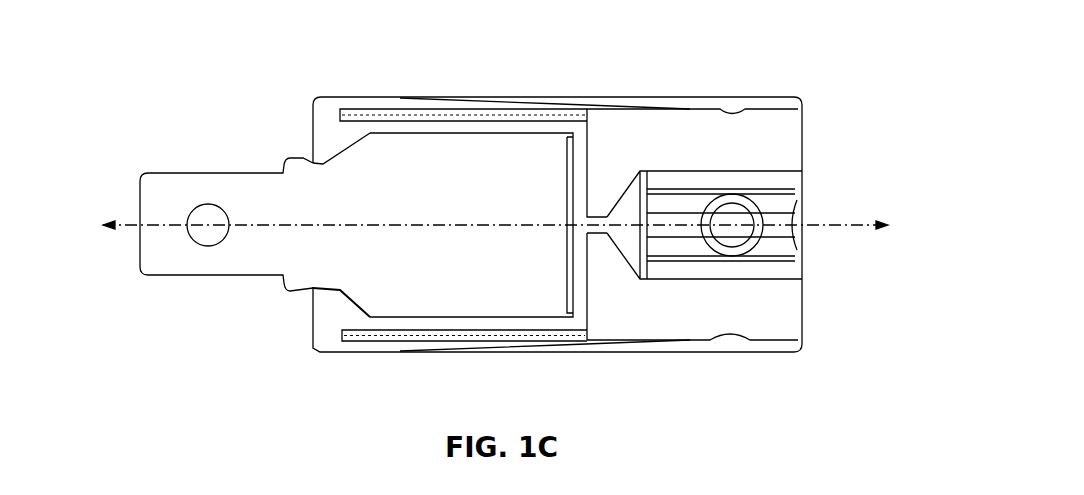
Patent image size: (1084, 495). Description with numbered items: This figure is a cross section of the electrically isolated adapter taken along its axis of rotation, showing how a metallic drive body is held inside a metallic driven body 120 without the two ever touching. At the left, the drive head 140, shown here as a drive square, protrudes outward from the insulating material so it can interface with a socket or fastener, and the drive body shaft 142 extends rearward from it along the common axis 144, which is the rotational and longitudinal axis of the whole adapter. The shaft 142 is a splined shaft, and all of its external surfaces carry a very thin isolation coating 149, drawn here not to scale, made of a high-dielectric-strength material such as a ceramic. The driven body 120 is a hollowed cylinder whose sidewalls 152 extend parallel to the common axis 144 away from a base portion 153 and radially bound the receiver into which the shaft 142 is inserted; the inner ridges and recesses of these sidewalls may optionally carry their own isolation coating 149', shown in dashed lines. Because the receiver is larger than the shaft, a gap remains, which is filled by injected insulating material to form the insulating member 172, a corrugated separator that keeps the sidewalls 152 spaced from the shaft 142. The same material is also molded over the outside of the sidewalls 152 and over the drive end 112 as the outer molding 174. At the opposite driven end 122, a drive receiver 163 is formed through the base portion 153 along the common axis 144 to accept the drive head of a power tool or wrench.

The drive end 112 is at (330, 301).
The driven body 120 is at (673, 122).
The driven end 122 is at (812, 135).
The drive head 140 is at (213, 188).
The drive body shaft 142 is at (458, 283).
The common axis 144 is at (820, 228).
The isolation coating 149 is at (420, 221).
The isolation coating 149' is at (610, 224).
The sidewalls 152 is at (492, 338).
The base portion 153 is at (742, 312).
The drive receiver 163 is at (790, 193).
The insulating member 172 is at (477, 127).
The outer molding 174 is at (375, 345).